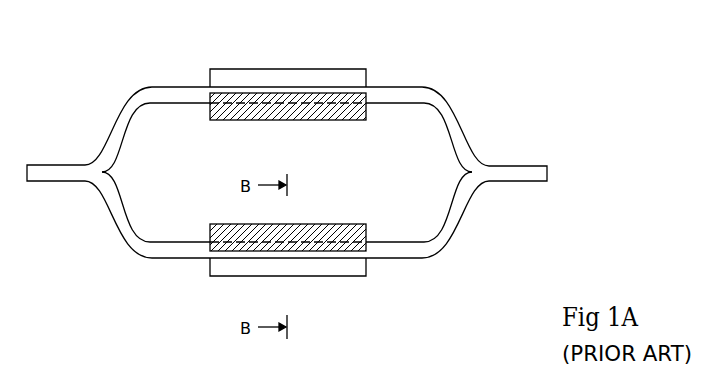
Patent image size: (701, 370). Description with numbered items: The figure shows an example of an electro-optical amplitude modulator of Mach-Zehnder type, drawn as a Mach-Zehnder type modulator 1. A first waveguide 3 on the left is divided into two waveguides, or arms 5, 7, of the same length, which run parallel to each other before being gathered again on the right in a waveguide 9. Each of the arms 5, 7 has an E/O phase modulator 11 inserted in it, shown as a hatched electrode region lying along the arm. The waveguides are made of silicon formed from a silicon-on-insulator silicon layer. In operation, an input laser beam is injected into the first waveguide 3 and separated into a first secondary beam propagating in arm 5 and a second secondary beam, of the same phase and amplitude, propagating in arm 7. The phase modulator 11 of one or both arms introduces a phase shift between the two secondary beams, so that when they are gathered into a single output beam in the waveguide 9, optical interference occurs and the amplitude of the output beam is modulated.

The Mach-Zehnder type modulator 1 is at (84, 62).
The first waveguide 3 is at (50, 171).
The arm 5 is at (177, 249).
The arm 7 is at (178, 96).
The waveguide 9 is at (532, 168).
The E/O phase modulator 11 is at (374, 60).